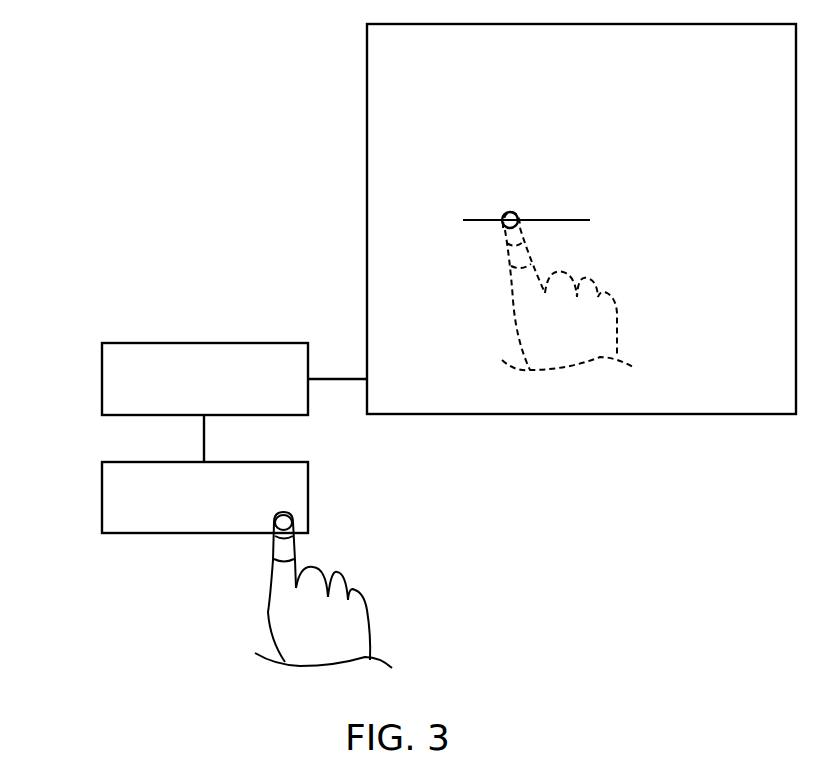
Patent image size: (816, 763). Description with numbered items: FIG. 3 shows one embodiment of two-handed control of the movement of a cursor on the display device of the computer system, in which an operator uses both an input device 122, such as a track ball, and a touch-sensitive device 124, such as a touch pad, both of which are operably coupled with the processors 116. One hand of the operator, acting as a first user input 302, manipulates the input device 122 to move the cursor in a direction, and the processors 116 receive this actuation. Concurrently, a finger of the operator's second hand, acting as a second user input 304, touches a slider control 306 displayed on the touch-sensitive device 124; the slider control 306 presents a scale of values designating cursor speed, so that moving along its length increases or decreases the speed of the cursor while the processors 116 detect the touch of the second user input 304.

The processors 116 is at (99, 378).
The input device 122 is at (99, 497).
The touch-sensitive device 124 is at (365, 217).
The first user input 302 is at (268, 612).
The second user input 304 is at (513, 323).
The slider control 306 is at (557, 215).